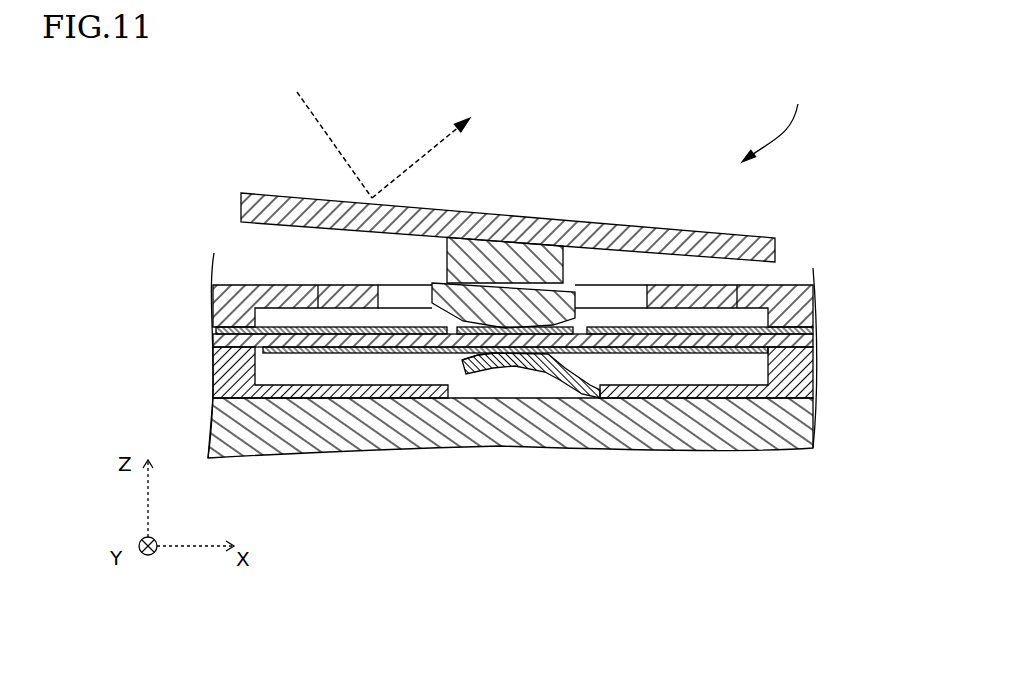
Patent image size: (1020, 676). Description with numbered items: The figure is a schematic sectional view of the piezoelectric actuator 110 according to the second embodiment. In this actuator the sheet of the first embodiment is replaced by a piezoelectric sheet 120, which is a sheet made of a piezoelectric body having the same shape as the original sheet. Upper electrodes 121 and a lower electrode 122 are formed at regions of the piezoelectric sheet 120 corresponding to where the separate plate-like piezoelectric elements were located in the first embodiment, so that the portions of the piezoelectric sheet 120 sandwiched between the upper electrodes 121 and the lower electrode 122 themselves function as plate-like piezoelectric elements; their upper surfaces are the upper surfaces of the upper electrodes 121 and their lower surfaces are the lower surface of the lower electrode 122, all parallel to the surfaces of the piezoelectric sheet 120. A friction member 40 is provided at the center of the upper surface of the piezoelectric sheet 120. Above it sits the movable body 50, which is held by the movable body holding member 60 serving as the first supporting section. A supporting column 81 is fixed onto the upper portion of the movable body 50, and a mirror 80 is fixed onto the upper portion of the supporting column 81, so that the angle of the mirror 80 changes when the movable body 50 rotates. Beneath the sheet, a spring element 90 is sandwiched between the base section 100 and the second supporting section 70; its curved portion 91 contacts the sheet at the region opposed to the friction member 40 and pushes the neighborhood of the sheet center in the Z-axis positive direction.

The piezoelectric actuator 110 is at (787, 122).
The mirror 80 is at (502, 212).
The supporting column 81 is at (448, 262).
The friction member 40 is at (432, 300).
The movable body 50 is at (583, 300).
The movable body holding member 60 is at (268, 285).
The upper electrode layer 121 is at (352, 327).
The piezoelectric sheet 120 is at (817, 336).
The lower electrode layer 122 is at (628, 353).
The second supporting section 70 is at (803, 367).
The spring element 90 is at (553, 372).
The curved portion 91 is at (509, 366).
The base section 100 is at (800, 423).